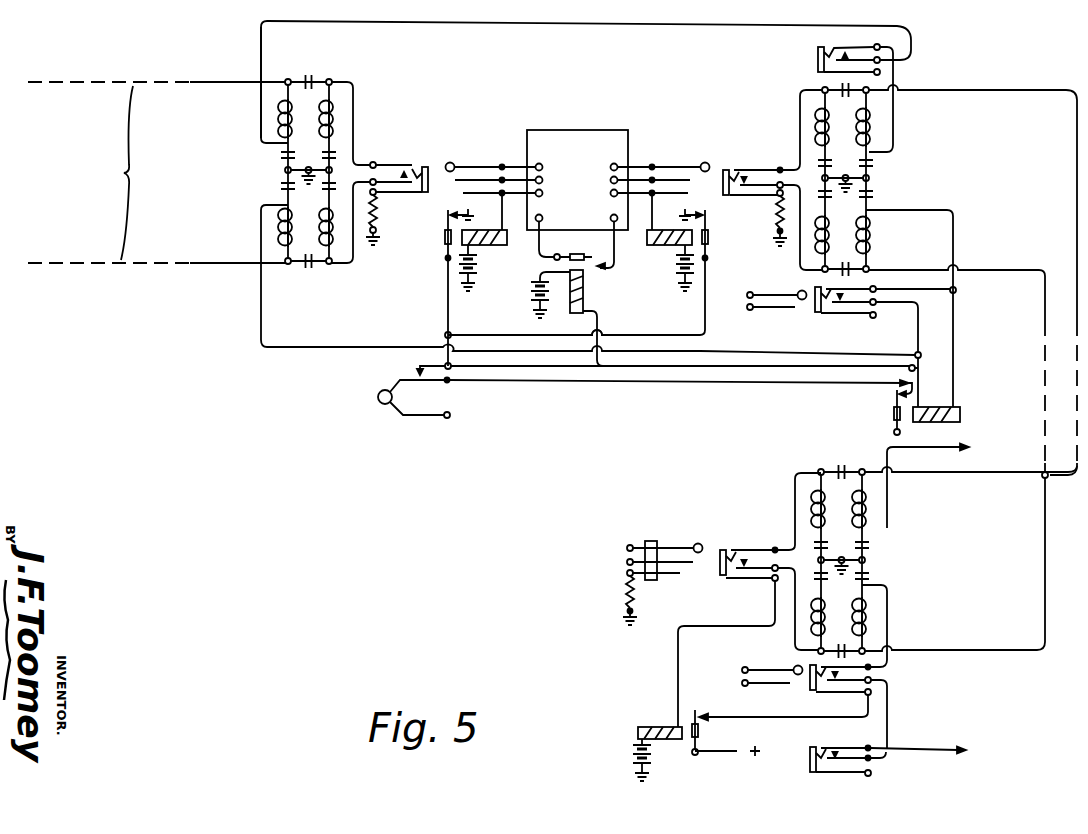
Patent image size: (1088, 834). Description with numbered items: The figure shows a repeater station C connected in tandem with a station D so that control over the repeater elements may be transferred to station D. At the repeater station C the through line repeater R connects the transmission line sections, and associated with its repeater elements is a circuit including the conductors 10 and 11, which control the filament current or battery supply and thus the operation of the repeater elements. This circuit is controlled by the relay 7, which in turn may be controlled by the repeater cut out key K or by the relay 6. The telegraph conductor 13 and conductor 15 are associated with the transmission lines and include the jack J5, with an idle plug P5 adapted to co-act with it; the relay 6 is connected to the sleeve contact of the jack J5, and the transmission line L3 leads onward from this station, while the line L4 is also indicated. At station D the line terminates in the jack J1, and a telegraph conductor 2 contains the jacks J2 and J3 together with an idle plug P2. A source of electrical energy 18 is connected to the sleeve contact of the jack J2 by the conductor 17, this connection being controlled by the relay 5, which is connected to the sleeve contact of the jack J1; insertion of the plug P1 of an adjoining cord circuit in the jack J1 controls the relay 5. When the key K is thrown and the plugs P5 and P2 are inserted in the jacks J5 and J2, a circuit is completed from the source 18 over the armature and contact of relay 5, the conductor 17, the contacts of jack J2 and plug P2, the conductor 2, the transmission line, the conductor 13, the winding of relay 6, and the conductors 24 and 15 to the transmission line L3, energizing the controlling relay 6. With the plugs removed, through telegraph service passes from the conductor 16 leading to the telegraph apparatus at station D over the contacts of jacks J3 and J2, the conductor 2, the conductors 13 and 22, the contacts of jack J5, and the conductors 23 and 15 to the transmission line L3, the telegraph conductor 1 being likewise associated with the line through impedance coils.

The telegraph conductor 1 is at (920, 455).
The telegraph conductor 2 is at (886, 632).
The relay 5 is at (663, 724).
The relay 6 is at (935, 412).
The relay 7 is at (567, 318).
The conductor 10 is at (565, 240).
The conductor 11 is at (601, 245).
The conductor 13 is at (955, 268).
The conductor 15 is at (260, 312).
The conductor 16 is at (950, 740).
The conductor 17 is at (768, 716).
The source of electrical energy 18 is at (727, 766).
The conductor 22 is at (930, 294).
The conductor 23 is at (927, 345).
The conductor 24 is at (927, 398).
The repeater station C is at (586, 86).
The station D is at (927, 561).
The repeater R is at (577, 249).
The repeater cut out key K is at (632, 398).
The transmission line L3 is at (156, 172).
The transmission line L4 is at (1077, 362).
The plug P1 is at (663, 569).
The idle plug P2 is at (772, 663).
The idle plug P5 is at (900, 279).
The jack J1 is at (749, 550).
The jack J2 is at (847, 707).
The jack J3 is at (845, 749).
The jack J5 is at (845, 318).